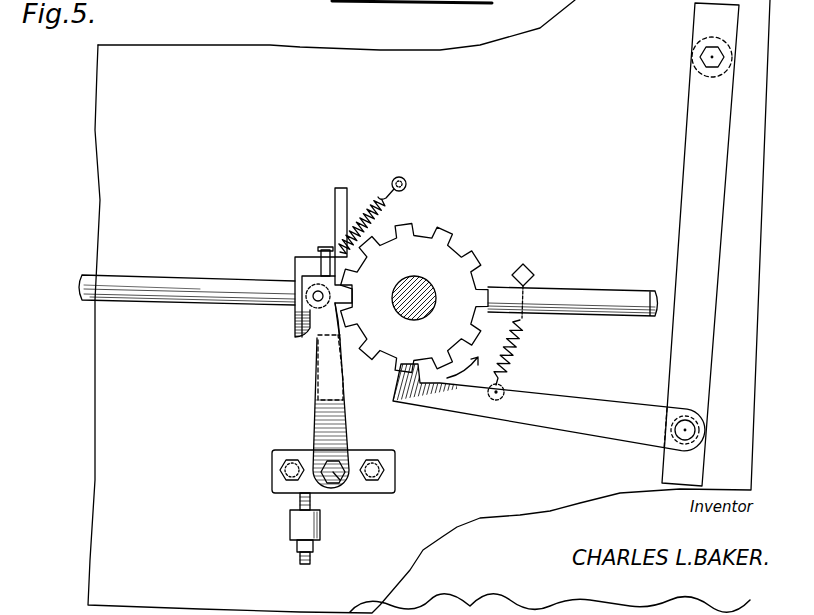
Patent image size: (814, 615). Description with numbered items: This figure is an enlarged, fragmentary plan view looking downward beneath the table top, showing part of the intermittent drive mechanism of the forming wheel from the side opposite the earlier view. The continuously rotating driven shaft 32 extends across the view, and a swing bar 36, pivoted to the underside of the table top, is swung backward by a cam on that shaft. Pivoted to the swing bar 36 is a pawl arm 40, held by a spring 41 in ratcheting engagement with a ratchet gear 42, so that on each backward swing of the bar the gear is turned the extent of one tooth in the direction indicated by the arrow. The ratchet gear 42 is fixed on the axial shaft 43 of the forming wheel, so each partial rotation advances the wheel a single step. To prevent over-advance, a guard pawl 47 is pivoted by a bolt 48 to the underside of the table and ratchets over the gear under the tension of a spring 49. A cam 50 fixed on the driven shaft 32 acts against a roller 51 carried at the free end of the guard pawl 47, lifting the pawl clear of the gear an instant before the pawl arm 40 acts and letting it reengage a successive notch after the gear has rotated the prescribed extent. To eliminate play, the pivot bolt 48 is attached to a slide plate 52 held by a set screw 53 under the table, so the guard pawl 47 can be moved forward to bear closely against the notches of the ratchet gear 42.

The driven shaft 32 is at (153, 286).
The swing bar 36 is at (690, 215).
The pawl arm 40 is at (586, 402).
The spring 41 is at (516, 352).
The ratchet gear 42 is at (470, 254).
The axial shaft 43 is at (418, 290).
The guard pawl 47 is at (318, 362).
The bolt 48 is at (347, 483).
The spring 49 is at (378, 197).
The cam 50 is at (318, 398).
The roller 51 is at (294, 322).
The slide plate 52 is at (395, 461).
The set screw 53 is at (298, 501).